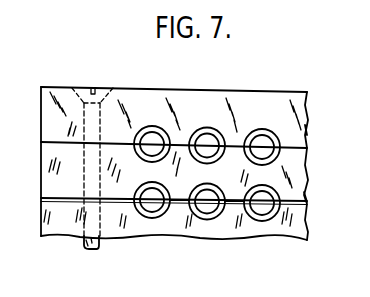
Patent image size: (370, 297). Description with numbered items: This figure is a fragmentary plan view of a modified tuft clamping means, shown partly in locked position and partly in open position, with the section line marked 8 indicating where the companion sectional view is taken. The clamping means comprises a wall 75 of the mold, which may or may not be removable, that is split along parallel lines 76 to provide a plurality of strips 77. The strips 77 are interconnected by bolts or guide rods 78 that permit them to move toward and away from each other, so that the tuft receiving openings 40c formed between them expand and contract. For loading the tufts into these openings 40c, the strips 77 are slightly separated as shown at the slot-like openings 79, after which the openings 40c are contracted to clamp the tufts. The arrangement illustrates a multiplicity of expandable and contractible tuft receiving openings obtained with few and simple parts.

The wall 75 is at (212, 87).
The section line 8- 8 is at (265, 64).
The strips 77 is at (296, 103).
The parallel lines 76 is at (299, 131).
The openings 40c is at (206, 210).
The guide rods 78 is at (83, 241).
The slot-like openings 79 is at (232, 205).